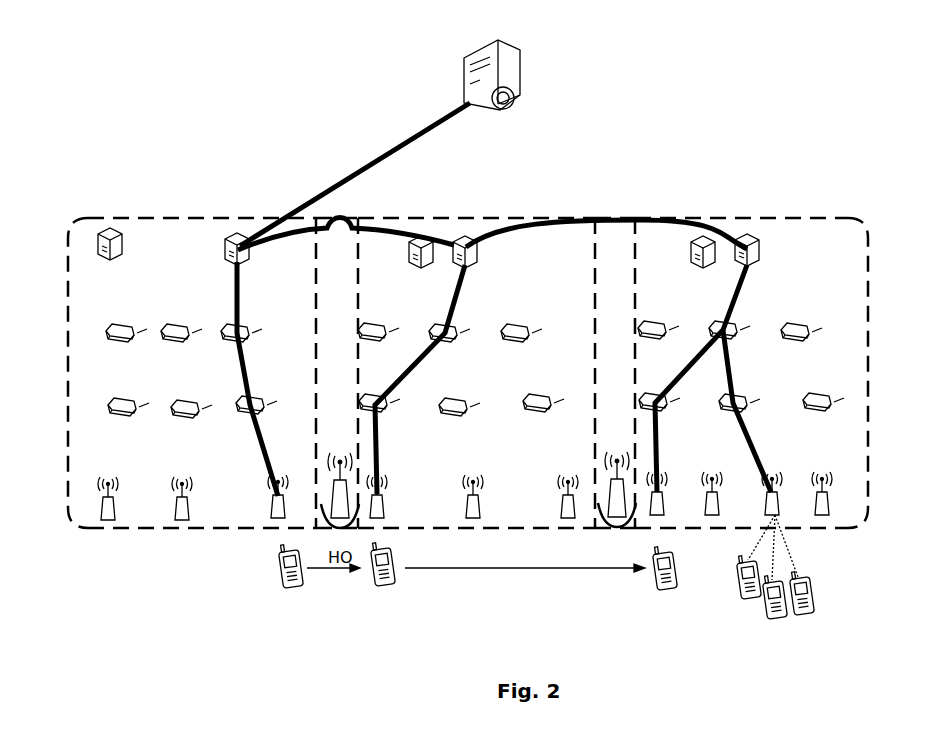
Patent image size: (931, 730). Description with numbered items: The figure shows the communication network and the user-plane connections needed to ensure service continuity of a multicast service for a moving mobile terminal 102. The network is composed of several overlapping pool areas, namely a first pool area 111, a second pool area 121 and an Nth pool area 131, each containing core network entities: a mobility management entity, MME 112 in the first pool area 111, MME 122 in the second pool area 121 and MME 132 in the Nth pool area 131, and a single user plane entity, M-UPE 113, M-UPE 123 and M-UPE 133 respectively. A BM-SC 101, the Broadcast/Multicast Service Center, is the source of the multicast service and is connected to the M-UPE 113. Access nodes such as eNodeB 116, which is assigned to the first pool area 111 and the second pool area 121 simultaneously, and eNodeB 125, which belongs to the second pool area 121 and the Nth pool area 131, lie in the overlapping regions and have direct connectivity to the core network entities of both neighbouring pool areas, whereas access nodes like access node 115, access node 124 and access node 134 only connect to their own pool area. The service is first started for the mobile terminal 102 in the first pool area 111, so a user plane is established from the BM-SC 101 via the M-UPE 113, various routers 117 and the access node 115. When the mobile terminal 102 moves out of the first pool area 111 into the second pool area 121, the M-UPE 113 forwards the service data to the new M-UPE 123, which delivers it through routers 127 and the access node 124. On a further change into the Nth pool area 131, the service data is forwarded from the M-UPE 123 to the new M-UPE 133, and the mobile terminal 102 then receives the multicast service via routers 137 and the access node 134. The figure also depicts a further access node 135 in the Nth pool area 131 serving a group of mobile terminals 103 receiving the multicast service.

The BM-SC 101 is at (462, 75).
The mobile terminal 102 is at (303, 588).
The user equipments 103 is at (766, 610).
The Pool Area 1 111 is at (82, 212).
The MME 112 is at (98, 246).
The M-UPE 113 is at (234, 238).
The access node 115 is at (274, 521).
The eNodeB 116 is at (334, 488).
The routers 117 is at (237, 402).
The Pool Area 2 121 is at (561, 210).
The MME 122 is at (409, 265).
The M-UPE 123 is at (480, 252).
The access node 124 is at (393, 533).
The eNodeB 125 is at (605, 527).
The routers 127 is at (448, 343).
The Pool Area N 131 is at (657, 210).
The MME 132 is at (690, 262).
The M-UPE 133 is at (759, 241).
The access node 134 is at (675, 522).
The eNB of pool area N 135 is at (790, 527).
The routers 137 is at (737, 342).